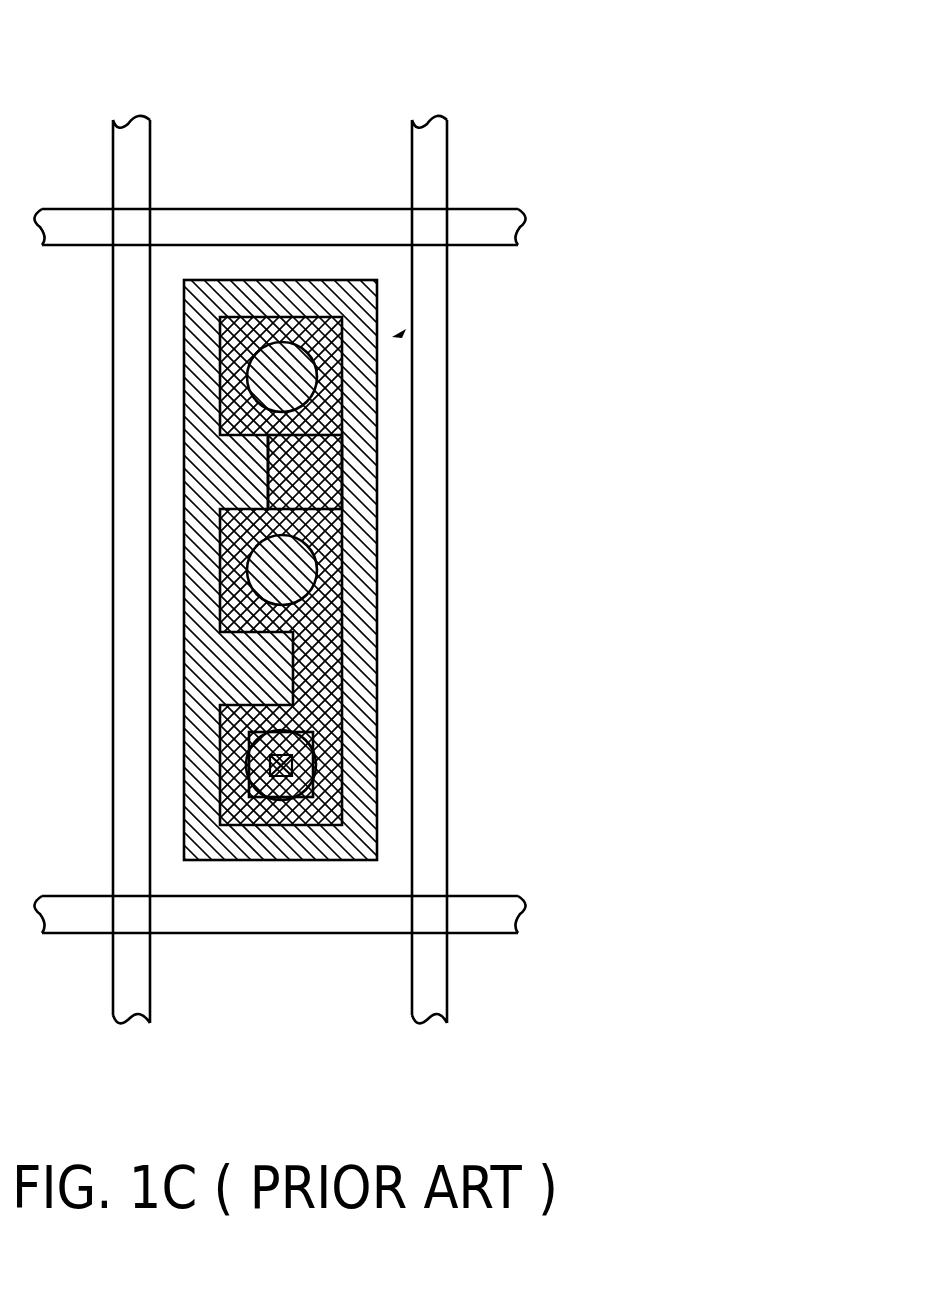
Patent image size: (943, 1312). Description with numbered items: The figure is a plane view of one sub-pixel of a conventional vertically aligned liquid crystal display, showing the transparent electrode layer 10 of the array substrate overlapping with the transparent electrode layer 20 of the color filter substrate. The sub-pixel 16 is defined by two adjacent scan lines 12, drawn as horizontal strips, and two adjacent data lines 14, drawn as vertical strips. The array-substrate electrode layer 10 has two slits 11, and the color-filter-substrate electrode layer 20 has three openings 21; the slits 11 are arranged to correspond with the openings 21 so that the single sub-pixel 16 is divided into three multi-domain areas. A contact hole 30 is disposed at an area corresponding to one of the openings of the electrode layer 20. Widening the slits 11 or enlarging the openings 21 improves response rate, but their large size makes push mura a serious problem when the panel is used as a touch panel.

The transparent electrode layer of the array substrate 10 is at (280, 378).
The slit 11 is at (297, 477).
The scan line 12 is at (496, 227).
The data line 14 is at (133, 147).
The sub-pixel 16 is at (400, 334).
The transparent electrode layer of the color filter substrate 20 is at (378, 587).
The opening 21 is at (280, 378).
The contact hole 30 is at (252, 762).